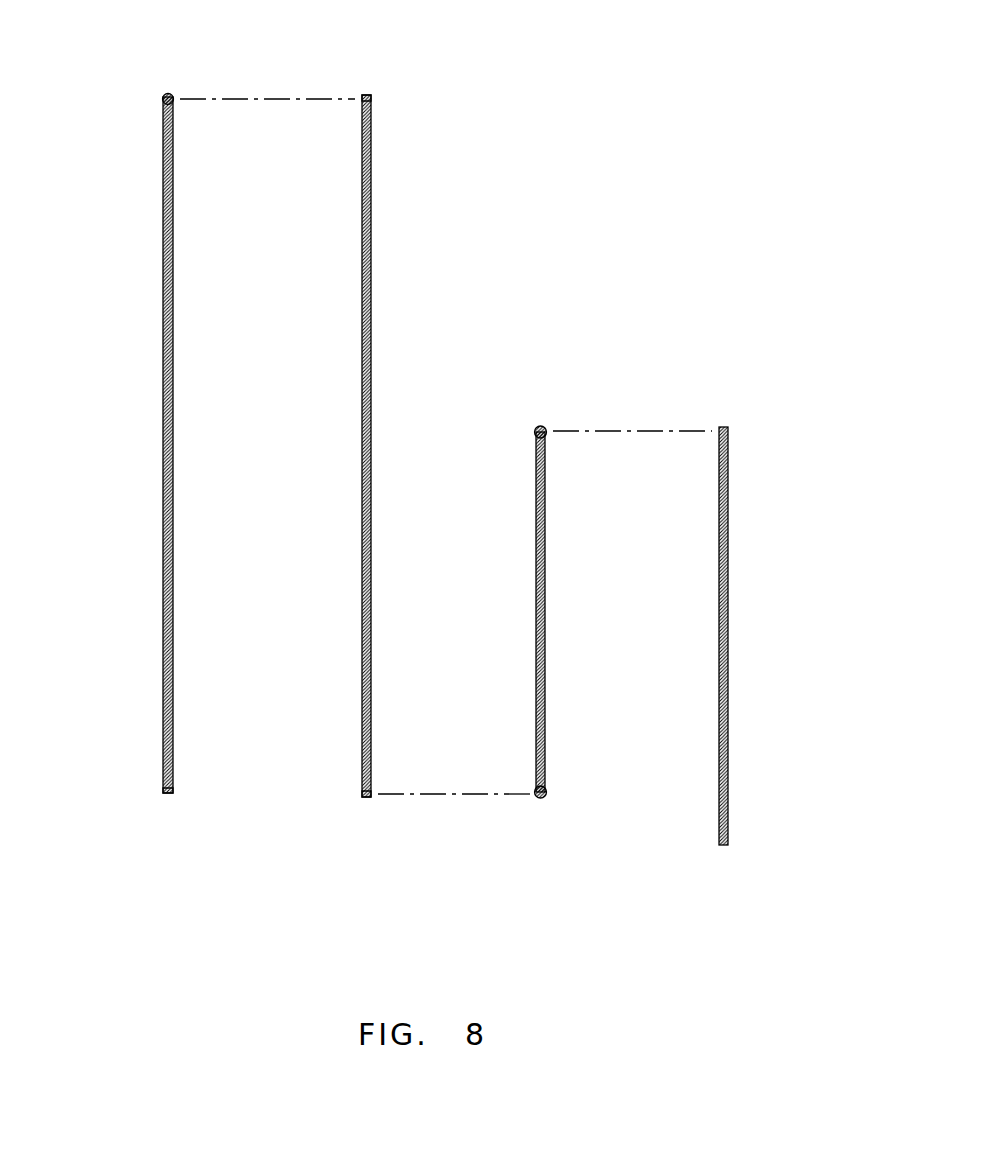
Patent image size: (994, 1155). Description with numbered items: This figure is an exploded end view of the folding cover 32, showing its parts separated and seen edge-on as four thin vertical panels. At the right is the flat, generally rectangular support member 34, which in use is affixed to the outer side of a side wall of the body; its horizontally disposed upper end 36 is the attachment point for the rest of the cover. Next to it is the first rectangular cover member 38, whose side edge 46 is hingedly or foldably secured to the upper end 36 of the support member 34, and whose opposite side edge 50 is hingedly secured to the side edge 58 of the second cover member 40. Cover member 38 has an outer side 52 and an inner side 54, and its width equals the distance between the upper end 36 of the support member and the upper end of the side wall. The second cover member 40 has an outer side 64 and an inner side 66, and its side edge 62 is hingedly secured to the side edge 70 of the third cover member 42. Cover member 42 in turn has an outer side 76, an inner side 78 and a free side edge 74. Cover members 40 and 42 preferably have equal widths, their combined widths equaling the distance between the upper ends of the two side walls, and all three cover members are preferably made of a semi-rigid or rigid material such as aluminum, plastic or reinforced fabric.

The cover 32 is at (579, 320).
The support member 34 is at (728, 655).
The upper end of support member 36 is at (726, 427).
The cover member 38 is at (548, 579).
The cover member 40 is at (374, 415).
The cover member 42 is at (176, 435).
The side edge of cover member 38 46 is at (545, 425).
The side edge of cover member 38 50 is at (546, 790).
The outer side of cover member 38 52 is at (545, 690).
The inner side of cover member 38 54 is at (536, 621).
The side edge of cover member 40 58 is at (371, 795).
The side edge of cover member 40 62 is at (372, 95).
The outer side of cover member 40 64 is at (361, 311).
The inner side of cover member 40 66 is at (371, 236).
The side edge of cover member 42 70 is at (172, 793).
The side edge of cover member 42 74 is at (170, 95).
The outer side of cover member 42 76 is at (173, 568).
The inner side of cover member 42 78 is at (163, 636).